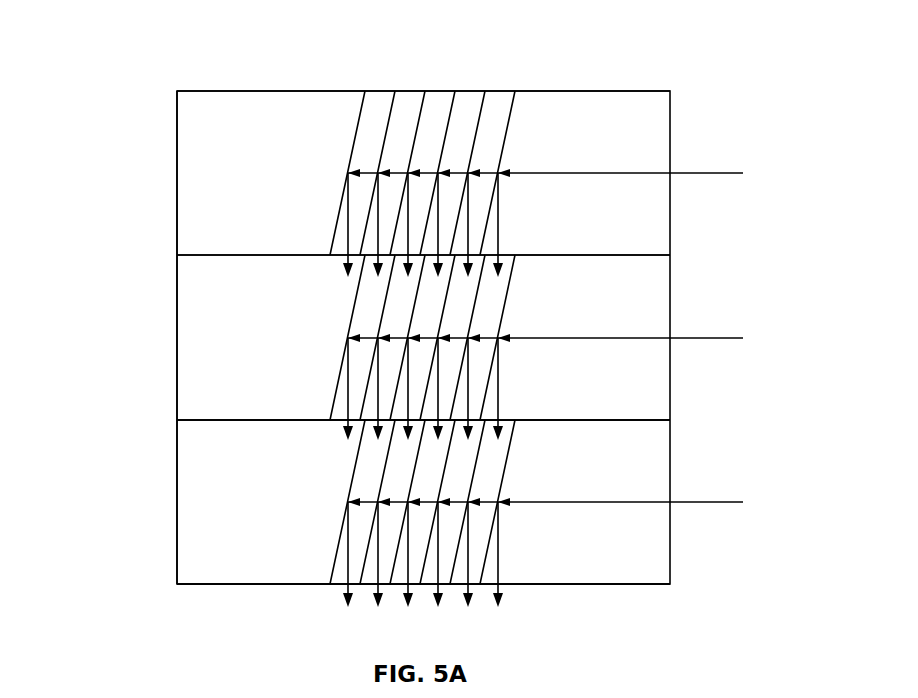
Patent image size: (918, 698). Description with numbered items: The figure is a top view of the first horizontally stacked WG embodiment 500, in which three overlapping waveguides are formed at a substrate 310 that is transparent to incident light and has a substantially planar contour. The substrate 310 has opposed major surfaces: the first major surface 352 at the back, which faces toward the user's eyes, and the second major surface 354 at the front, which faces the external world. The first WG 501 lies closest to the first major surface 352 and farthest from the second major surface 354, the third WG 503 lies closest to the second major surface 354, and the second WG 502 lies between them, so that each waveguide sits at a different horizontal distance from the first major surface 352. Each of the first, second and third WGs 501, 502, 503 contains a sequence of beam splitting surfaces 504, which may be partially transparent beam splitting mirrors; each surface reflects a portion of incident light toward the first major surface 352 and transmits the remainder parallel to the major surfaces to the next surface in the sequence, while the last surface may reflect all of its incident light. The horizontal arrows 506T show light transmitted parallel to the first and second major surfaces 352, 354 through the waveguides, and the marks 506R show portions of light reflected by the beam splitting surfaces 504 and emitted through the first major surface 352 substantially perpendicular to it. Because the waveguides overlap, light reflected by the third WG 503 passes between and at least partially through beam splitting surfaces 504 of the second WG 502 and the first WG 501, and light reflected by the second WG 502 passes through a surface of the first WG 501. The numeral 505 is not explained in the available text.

The first horizontally stacked WG embodiment 500 is at (133, 48).
The substrate 310 is at (610, 107).
The second major surface 354 is at (210, 90).
The first major surface 352 is at (262, 586).
The side edge of light guide 505 is at (200, 586).
The first WG 501 is at (200, 479).
The second WG 502 is at (200, 349).
The third WG 503 is at (200, 161).
The beam splitting surfaces 504 is at (357, 120).
The horizontal arrows 506T is at (362, 168).
The dots 506R is at (480, 215).